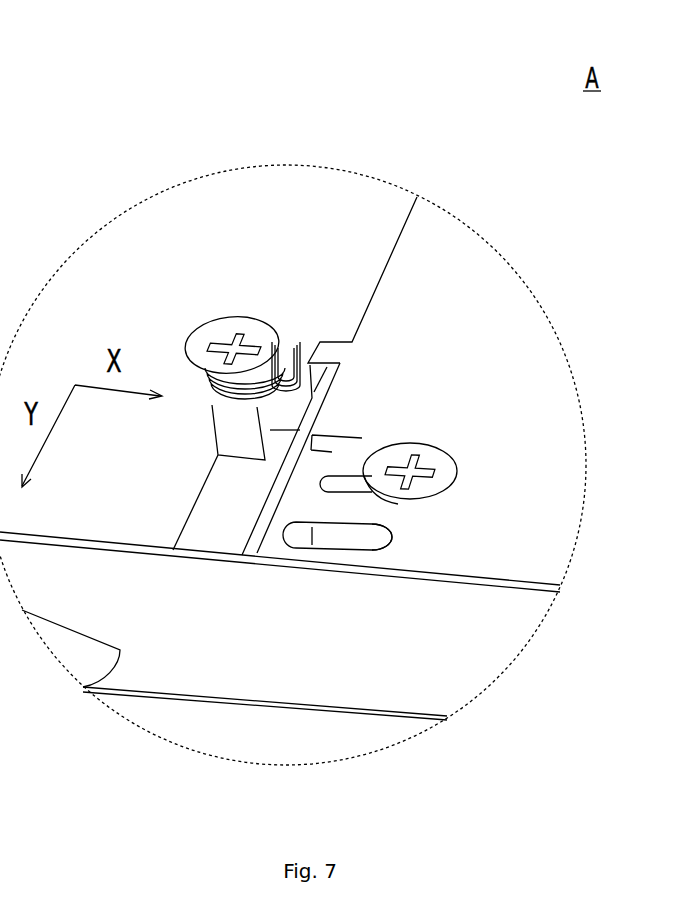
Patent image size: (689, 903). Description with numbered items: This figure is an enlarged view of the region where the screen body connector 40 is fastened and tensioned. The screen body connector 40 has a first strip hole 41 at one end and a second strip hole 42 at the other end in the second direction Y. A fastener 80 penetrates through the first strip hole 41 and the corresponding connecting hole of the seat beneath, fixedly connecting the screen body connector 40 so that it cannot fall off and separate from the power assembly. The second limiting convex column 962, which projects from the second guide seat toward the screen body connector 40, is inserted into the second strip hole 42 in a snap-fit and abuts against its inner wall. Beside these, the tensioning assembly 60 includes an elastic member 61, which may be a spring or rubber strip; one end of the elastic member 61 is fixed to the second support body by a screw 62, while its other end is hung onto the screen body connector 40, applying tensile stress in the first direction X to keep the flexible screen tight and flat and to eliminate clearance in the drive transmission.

The screen body connector 40 is at (425, 273).
The first strip hole 41 is at (338, 490).
The second strip hole 42 is at (330, 537).
The tensioning assembly 60 is at (268, 110).
The elastic member 61 is at (292, 342).
The screw 62 is at (220, 335).
The fastener 80 is at (457, 473).
The second limiting convex column 962 is at (380, 545).